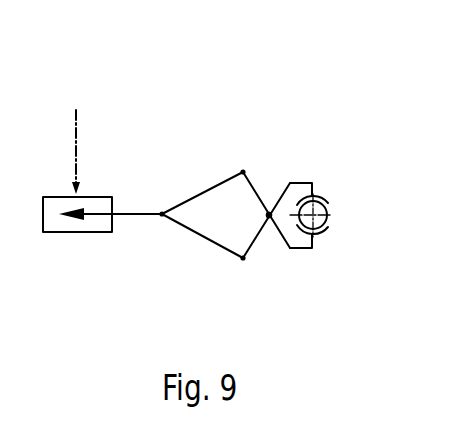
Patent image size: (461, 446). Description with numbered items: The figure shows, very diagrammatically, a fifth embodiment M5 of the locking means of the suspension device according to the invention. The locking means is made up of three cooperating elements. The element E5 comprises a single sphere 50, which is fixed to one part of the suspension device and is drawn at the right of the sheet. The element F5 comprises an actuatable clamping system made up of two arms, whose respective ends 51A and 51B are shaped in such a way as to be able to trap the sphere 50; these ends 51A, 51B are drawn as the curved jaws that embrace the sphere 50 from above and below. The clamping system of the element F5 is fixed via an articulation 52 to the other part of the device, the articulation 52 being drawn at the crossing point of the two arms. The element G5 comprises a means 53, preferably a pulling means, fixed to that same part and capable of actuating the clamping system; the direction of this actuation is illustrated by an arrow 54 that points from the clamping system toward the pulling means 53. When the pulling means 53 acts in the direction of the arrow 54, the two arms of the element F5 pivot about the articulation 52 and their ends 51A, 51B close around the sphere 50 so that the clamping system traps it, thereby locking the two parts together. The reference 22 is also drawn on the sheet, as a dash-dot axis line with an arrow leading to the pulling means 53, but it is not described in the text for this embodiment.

The axis / direction line 22 is at (77, 127).
The means 53 is at (103, 232).
The arrow 54 is at (96, 212).
The element G5 is at (73, 242).
The element F5 is at (198, 262).
The articulation 52 is at (270, 212).
The sphere 50 is at (326, 226).
The end 51A is at (318, 196).
The end 51B is at (316, 234).
The element E5 is at (340, 204).
The fifth embodiment of the locking means M5 is at (240, 104).